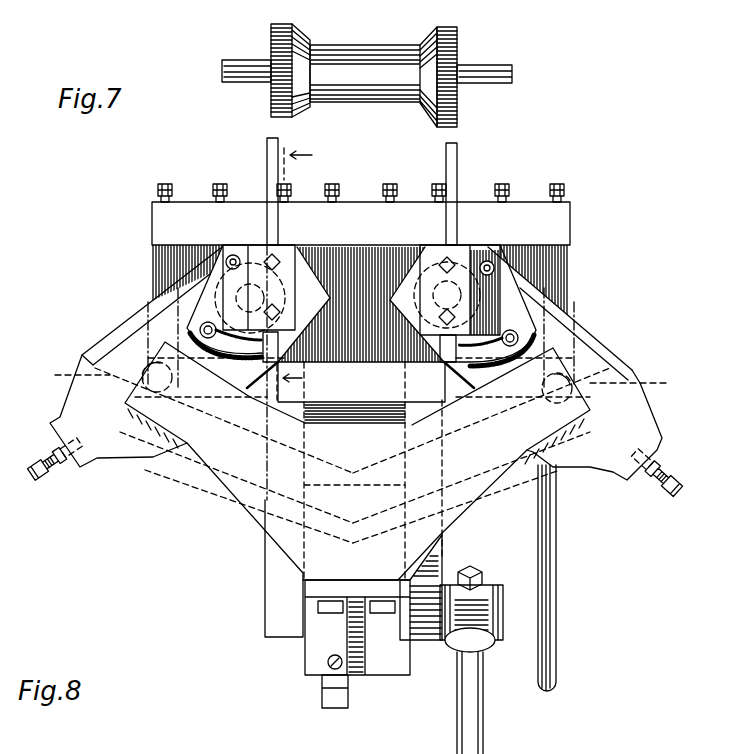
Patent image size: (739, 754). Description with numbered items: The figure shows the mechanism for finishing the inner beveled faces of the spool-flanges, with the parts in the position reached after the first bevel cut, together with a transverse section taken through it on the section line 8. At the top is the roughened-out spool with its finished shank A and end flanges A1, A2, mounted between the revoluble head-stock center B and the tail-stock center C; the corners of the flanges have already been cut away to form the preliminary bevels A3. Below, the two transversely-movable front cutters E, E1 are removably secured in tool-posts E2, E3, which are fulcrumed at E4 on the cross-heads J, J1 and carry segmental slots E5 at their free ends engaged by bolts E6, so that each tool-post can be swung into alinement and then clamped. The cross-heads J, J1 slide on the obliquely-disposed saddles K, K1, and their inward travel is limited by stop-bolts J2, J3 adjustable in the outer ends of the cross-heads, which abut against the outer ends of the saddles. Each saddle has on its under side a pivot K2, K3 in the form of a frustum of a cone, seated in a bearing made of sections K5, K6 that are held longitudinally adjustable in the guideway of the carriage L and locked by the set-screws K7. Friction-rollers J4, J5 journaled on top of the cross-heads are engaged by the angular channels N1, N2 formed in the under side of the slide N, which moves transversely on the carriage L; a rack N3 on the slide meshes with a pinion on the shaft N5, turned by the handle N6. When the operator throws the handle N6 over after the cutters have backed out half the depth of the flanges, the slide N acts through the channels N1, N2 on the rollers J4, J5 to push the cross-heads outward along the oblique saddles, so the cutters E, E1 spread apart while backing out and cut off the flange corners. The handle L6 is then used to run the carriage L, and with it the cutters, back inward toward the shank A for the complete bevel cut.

In FIG. 7, the shank A is at (373, 53).
In FIG. 7, the end flange A1 is at (276, 24).
In FIG. 7, the end flange A2 is at (445, 28).
In FIG. 7, the preliminary bevel A3 is at (302, 37).
In FIG. 7, the head-stock center B is at (251, 84).
In FIG. 7, the tail-stock center C is at (490, 59).
In FIG. 8, the carriage L is at (254, 595).
In FIG. 8, the handle L6 is at (556, 552).
In FIG. 8, the set-screws K7 is at (172, 195).
In FIG. 8, the front cutter E is at (267, 160).
In FIG. 8, the front cutter E1 is at (457, 160).
In FIG. 8, the tool-post E2 is at (250, 298).
In FIG. 8, the tool-post E3 is at (447, 295).
In FIG. 8, the fulcrum E4 is at (237, 259).
In FIG. 8, the segmental slot E5 is at (263, 350).
In FIG. 8, the bolt E6 is at (228, 322).
In FIG. 8, the saddle K is at (71, 374).
In FIG. 8, the saddle K1 is at (640, 381).
In FIG. 8, the pivot K2 is at (219, 262).
In FIG. 8, the pivot K3 is at (424, 270).
In FIG. 8, the bearing section K5 is at (330, 358).
In FIG. 8, the bearing section K6 is at (193, 268).
In FIG. 8, the section line 8 is at (290, 268).
In FIG. 8, the cross-head J is at (140, 318).
In FIG. 8, the cross-head J1 is at (600, 352).
In FIG. 8, the stop-bolt J2 is at (44, 463).
In FIG. 8, the stop-bolt J3 is at (677, 478).
In FIG. 8, the friction-roller J4 is at (170, 386).
In FIG. 8, the friction-roller J5 is at (545, 392).
In FIG. 8, the slide N is at (283, 528).
In FIG. 8, the angular channel N1 is at (232, 440).
In FIG. 8, the angular channel N2 is at (477, 448).
In FIG. 8, the rack N3 is at (340, 698).
In FIG. 8, the shaft N5 is at (503, 612).
In FIG. 8, the handle N6 is at (483, 742).